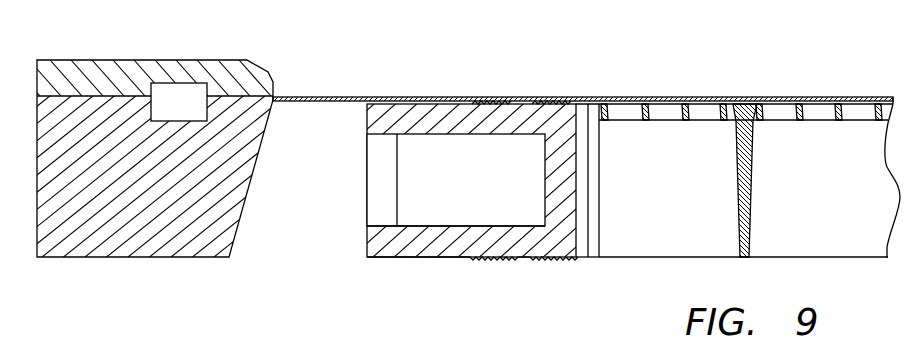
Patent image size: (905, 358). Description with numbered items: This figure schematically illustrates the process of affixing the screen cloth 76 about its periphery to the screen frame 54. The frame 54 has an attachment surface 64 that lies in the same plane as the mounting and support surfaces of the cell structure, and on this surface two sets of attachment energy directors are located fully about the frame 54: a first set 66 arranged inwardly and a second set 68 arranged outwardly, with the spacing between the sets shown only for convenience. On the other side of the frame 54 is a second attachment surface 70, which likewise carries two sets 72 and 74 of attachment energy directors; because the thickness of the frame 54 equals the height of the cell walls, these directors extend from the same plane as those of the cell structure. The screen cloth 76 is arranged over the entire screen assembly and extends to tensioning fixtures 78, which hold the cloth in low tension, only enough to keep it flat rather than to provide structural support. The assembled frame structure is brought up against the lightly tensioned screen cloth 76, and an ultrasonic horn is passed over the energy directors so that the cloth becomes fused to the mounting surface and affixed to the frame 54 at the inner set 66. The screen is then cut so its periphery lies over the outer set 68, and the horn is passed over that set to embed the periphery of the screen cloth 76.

The tensioning fixture 78 is at (139, 60).
The attachment surface 64 is at (410, 98).
The frame 54 is at (367, 197).
The second attachment surface 70 is at (392, 257).
The second set of attachment energy directors 68 is at (493, 101).
The set of attachment energy directors 74 is at (478, 260).
The set of attachment energy directors 72 is at (551, 260).
The first set of attachment energy directors 66 is at (580, 104).
The screen cloth 76 is at (855, 97).